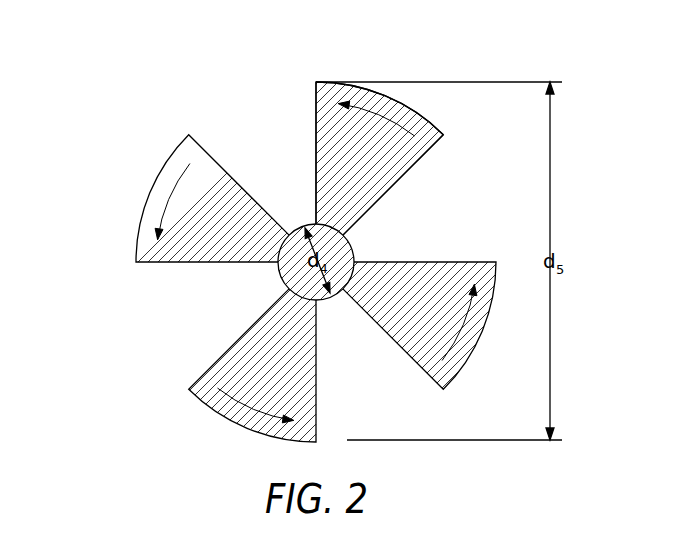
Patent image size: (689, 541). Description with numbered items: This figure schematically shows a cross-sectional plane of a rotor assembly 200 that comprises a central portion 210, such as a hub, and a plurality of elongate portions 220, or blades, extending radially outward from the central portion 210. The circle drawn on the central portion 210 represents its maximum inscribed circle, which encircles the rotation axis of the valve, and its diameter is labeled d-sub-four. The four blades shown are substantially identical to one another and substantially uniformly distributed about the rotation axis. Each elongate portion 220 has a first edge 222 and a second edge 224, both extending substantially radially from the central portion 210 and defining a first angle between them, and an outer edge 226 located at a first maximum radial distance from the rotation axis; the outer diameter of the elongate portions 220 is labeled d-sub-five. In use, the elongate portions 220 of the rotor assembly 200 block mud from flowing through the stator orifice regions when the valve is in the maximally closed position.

The rotor assembly 200 is at (122, 65).
The central portion 210 is at (280, 271).
The elongate portions 220 is at (316, 262).
The first edge 222 is at (316, 127).
The second edge 224 is at (411, 168).
The outer edge 226 is at (413, 110).